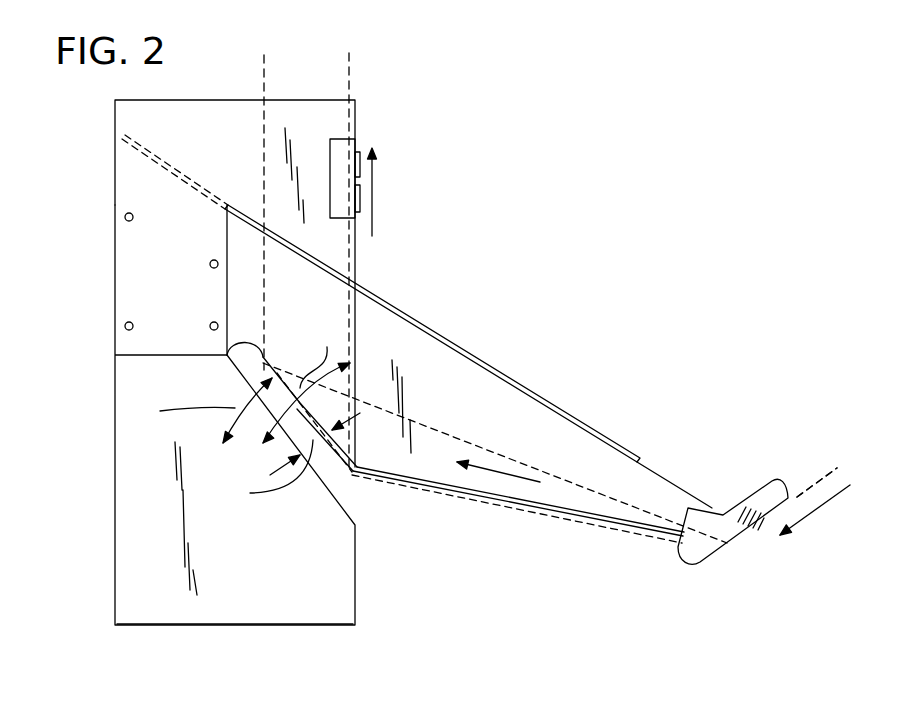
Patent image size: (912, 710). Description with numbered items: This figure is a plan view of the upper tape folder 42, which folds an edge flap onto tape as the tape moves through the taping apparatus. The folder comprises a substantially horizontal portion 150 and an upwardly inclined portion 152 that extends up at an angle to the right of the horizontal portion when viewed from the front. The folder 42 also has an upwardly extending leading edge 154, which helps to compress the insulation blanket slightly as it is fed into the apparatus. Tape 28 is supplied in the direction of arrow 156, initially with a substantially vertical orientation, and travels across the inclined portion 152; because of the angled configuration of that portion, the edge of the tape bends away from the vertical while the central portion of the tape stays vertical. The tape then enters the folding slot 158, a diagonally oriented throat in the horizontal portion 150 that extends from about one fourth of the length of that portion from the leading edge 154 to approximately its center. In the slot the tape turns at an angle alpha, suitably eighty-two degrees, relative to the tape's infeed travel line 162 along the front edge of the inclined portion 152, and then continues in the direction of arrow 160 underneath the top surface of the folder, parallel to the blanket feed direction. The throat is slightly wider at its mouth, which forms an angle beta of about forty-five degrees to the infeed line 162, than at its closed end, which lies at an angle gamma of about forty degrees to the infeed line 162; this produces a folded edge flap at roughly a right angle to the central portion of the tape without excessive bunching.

The substantially horizontal portion 150 is at (103, 625).
The upper tape folder 42 is at (69, 531).
The upwardly extending leading edge 154 is at (165, 608).
The folding slot 158 is at (263, 357).
The upwardly inclined portion 152 is at (730, 552).
The infeed travel line 162 is at (493, 470).
The arrow 160 is at (372, 200).
The arrow 156 is at (827, 503).
The tape 28 is at (813, 490).